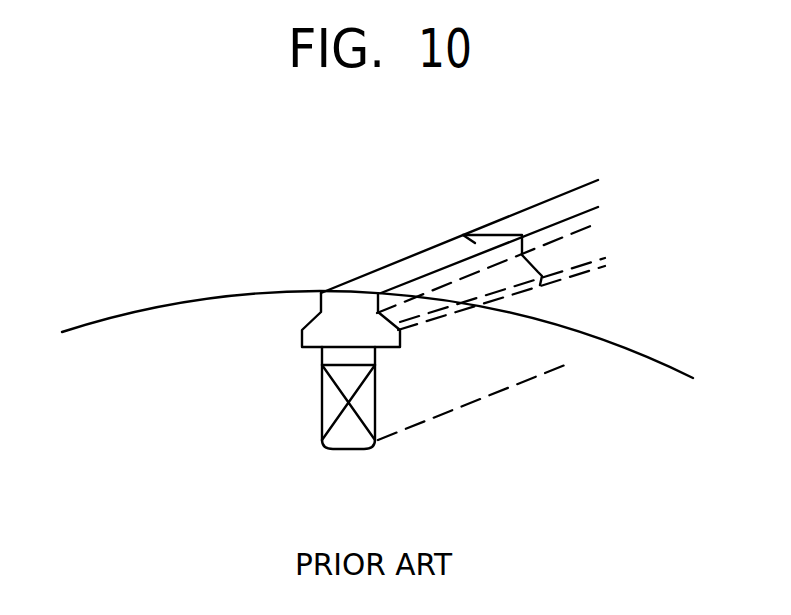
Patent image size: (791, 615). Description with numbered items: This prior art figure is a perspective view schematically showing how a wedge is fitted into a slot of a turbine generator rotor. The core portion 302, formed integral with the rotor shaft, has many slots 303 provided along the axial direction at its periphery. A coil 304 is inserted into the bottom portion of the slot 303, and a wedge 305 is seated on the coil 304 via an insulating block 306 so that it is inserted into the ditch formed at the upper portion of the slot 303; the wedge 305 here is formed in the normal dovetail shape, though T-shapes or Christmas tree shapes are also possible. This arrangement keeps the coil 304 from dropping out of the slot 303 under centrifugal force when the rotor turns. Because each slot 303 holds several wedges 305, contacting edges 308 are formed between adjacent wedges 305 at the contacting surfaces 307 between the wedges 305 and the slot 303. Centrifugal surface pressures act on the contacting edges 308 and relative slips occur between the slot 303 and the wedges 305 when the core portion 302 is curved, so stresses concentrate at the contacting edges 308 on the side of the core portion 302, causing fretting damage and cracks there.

The core portion 302 is at (575, 443).
The slot 303 is at (375, 398).
The coil 304 is at (327, 407).
The wedge 305 is at (471, 247).
The insulating block 306 is at (332, 356).
The contacting surface 307 is at (303, 342).
The contacting edge 308 is at (537, 258).